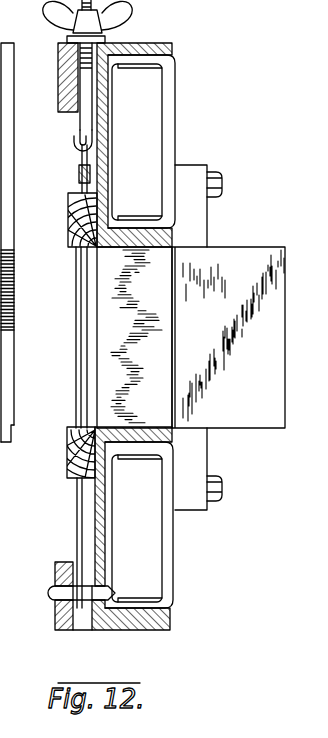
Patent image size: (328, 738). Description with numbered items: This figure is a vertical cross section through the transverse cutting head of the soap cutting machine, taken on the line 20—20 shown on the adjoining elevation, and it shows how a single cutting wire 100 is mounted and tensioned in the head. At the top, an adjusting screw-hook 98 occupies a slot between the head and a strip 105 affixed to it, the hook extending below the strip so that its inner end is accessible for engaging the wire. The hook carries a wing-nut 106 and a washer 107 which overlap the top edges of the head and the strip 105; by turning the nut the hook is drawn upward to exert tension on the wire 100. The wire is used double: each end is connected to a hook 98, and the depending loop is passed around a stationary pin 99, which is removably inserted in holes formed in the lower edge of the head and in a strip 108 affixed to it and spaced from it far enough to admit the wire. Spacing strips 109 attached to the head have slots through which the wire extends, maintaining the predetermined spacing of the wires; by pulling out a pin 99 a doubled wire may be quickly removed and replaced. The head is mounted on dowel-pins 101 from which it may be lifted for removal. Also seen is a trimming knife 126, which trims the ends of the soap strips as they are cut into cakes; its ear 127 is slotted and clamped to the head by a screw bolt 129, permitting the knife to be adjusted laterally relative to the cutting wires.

The panel 20 is at (1, 335).
The adjusting screw-hook 98 is at (92, 127).
The stationary pin 99 is at (107, 595).
The cutting wire 100 is at (81, 290).
The dowel-pin 101 is at (20, 460).
The strip 105 is at (68, 82).
The wing-nut 106 is at (126, 10).
The washer 107 is at (105, 40).
The strip 108 is at (48, 620).
The spacing strip 109 is at (96, 212).
The trimming knife 126 is at (97, 372).
The ear 127 is at (204, 233).
The screw bolt 129 is at (217, 190).